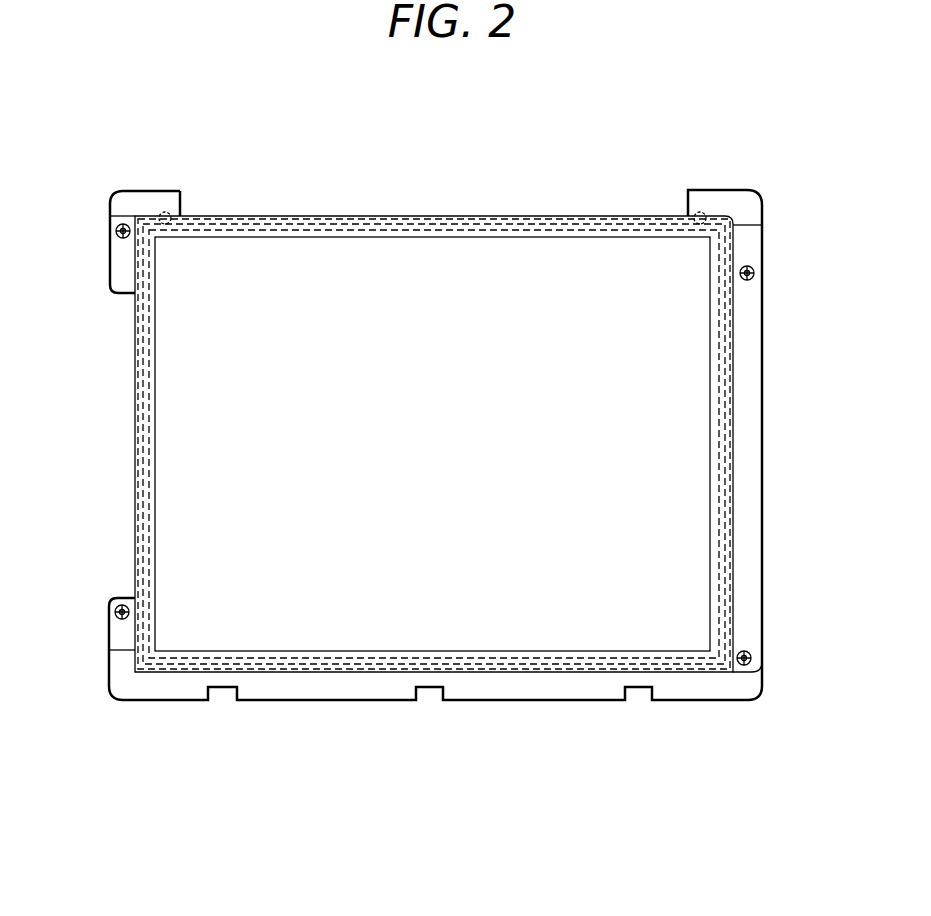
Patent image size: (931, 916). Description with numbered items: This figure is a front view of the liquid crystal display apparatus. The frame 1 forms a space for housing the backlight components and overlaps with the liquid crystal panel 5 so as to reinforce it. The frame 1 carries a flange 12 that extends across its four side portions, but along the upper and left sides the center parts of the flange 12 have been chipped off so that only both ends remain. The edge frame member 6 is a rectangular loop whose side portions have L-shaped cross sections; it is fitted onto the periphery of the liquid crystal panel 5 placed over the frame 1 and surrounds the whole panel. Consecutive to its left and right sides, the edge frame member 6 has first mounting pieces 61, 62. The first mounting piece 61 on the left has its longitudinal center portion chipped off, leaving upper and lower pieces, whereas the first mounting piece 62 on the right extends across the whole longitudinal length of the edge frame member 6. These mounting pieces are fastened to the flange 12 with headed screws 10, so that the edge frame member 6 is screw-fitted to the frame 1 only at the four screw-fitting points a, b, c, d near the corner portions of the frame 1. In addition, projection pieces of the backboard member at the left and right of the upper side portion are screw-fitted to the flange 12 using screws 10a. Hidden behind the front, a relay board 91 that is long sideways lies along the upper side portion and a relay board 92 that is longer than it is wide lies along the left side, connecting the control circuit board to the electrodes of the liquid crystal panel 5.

The frame 1 is at (120, 712).
The liquid crystal panel 5 is at (175, 472).
The edge frame member 6 is at (600, 212).
The screw 10 is at (115, 229).
The screw 10a is at (162, 205).
The flange 12 is at (133, 205).
The first mounting piece 61 is at (117, 280).
The first mounting piece 62 is at (747, 417).
The relay board 91 is at (412, 215).
The relay board 92 is at (147, 392).
The screw-fitting point a is at (105, 196).
The screw-fitting point b is at (112, 594).
The screw-fitting point c is at (768, 677).
The screw-fitting point d is at (768, 250).